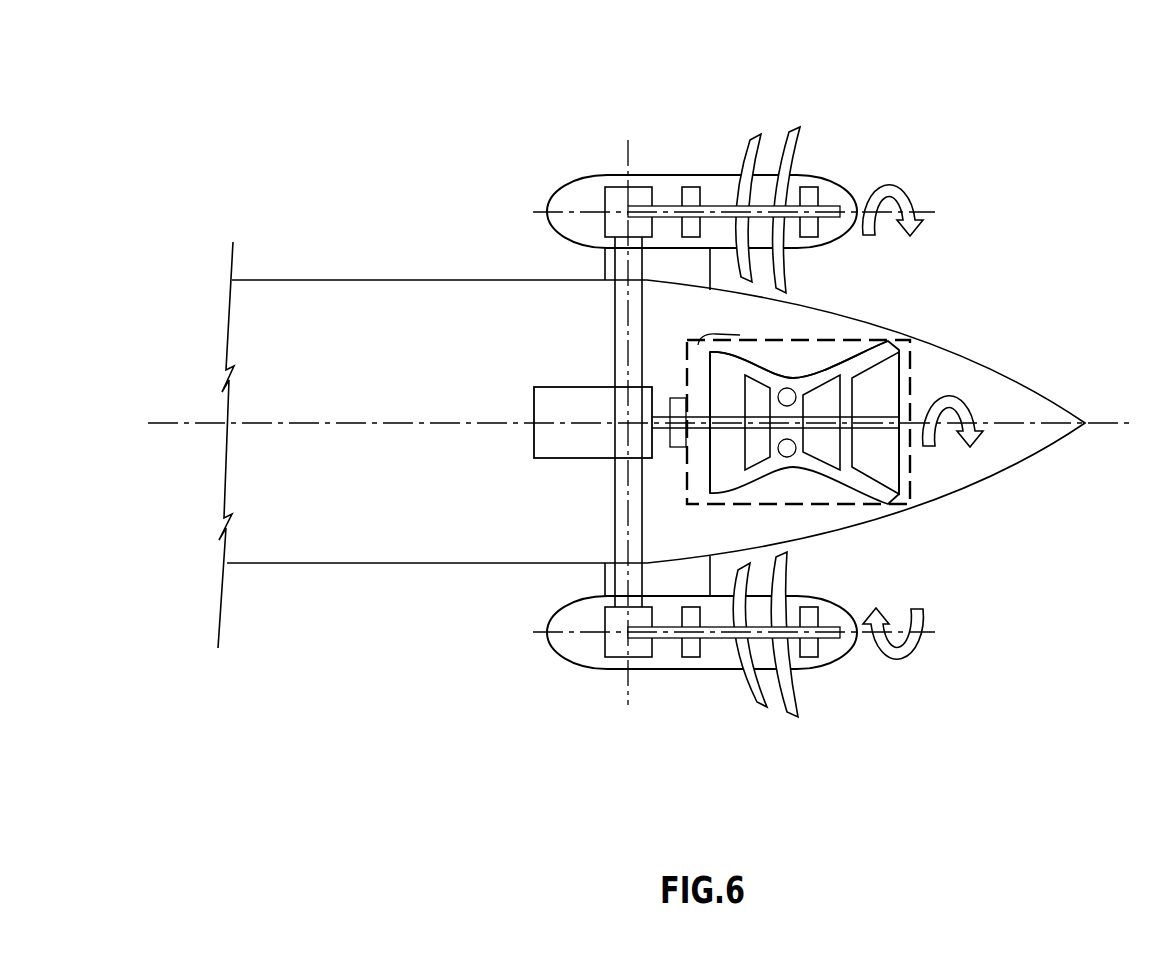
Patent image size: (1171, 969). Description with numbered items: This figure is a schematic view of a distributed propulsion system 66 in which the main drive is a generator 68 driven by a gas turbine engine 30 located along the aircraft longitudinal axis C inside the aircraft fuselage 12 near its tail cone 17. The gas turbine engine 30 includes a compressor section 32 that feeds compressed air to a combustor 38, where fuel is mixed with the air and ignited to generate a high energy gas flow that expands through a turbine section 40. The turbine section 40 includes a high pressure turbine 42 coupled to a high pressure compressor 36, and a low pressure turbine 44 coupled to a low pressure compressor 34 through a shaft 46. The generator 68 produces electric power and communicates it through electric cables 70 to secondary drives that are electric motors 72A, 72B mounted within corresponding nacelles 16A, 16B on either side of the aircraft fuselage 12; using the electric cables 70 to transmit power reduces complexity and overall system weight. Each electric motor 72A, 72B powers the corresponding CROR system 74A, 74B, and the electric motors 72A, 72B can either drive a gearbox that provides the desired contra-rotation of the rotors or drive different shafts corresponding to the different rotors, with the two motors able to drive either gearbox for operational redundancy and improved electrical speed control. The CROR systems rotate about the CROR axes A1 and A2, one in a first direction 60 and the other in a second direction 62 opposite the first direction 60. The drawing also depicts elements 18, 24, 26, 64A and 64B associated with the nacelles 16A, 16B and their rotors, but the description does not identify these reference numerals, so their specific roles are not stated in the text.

The aircraft fuselage 12 is at (682, 413).
The nacelle 16A is at (662, 177).
The nacelle 16B is at (648, 670).
The tail cone 17 is at (1049, 396).
The pylon strut 18 is at (604, 266).
The first propeller blade 24 is at (763, 705).
The second propeller blade 26 is at (793, 693).
The gas turbine engine 30 is at (828, 483).
The compressor section 32 is at (740, 334).
The low pressure compressor 34 is at (722, 472).
The high pressure compressor 36 is at (760, 442).
The combustor 38 is at (788, 457).
The turbine section 40 is at (815, 358).
The high pressure turbine 42 is at (830, 398).
The low pressure turbine 44 is at (880, 400).
The shaft 46 is at (878, 430).
The first direction 60 is at (884, 190).
The second direction 62 is at (890, 657).
The first propeller 64A is at (722, 202).
The second propeller 64B is at (770, 679).
The propulsion system 66 is at (1048, 258).
The generator 68 is at (532, 407).
The electric cables 70 is at (606, 316).
The electric motor 72A is at (615, 198).
The electric motor 72B is at (615, 647).
The CROR system 74A is at (728, 161).
The CROR system 74B is at (752, 695).
The CROR axis A1 is at (925, 205).
The CROR axis A2 is at (925, 640).
The aircraft longitudinal axis C is at (1125, 420).